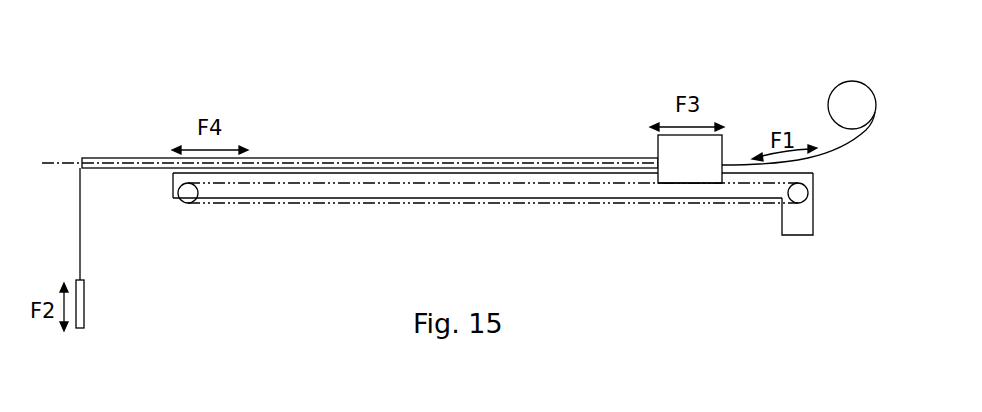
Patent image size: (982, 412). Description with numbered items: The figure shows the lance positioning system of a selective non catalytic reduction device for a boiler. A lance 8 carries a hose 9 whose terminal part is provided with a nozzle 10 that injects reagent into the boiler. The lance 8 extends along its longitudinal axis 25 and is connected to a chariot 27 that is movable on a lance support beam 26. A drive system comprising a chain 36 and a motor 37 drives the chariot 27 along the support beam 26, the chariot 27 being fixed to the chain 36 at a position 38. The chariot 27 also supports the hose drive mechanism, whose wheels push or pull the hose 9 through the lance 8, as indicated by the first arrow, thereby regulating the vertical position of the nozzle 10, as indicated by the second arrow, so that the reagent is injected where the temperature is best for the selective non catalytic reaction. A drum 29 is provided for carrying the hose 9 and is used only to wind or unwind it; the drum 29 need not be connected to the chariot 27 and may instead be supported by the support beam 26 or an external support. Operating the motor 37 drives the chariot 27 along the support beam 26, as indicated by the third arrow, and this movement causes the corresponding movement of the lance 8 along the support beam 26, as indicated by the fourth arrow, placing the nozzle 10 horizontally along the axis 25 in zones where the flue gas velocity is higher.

The lance 8 is at (110, 170).
The hose 9 is at (80, 225).
The nozzle 10 is at (82, 307).
The longitudinal axis 25 is at (43, 163).
The lance support beam 26 is at (393, 192).
The chariot 27 is at (714, 176).
The drum 29 is at (842, 98).
The chain 36 is at (288, 203).
The motor 37 is at (800, 223).
The position 38 is at (687, 185).